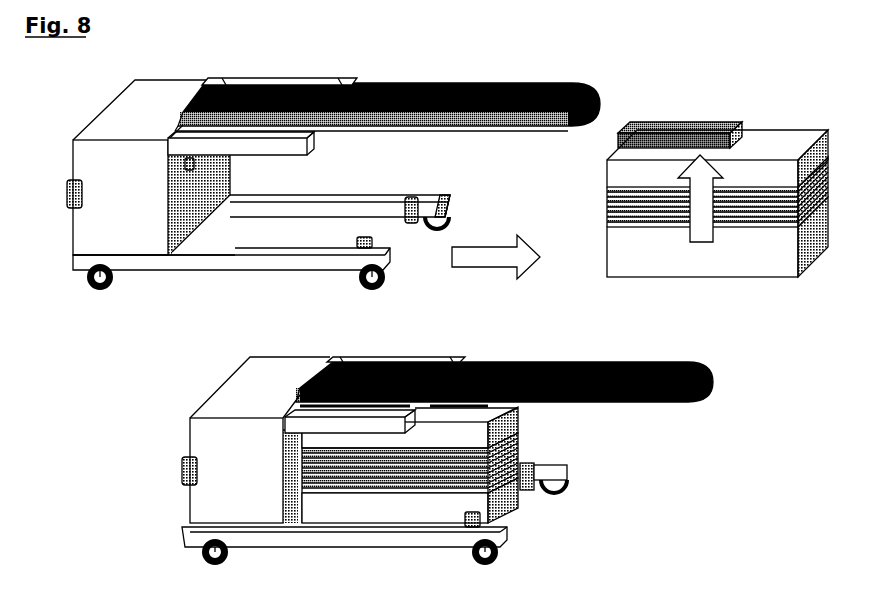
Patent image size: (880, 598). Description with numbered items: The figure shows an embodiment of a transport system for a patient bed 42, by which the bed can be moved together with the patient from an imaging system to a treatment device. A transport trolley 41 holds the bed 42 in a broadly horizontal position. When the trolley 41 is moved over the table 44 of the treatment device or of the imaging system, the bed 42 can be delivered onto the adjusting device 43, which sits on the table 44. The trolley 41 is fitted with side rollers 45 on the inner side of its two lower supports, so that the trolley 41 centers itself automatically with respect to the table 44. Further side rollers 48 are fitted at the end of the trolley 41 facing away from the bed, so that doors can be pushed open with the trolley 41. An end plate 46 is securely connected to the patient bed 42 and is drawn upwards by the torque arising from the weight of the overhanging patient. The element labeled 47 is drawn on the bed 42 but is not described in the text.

The transport trolley 41 is at (258, 183).
The patient bed 42 is at (406, 87).
The adjusting device 43 is at (663, 123).
The table 44 is at (744, 258).
The side rollers 45 is at (413, 200).
The end plate 46 is at (198, 95).
The conveyor belt 47 is at (444, 356).
The side rollers 48 is at (182, 461).